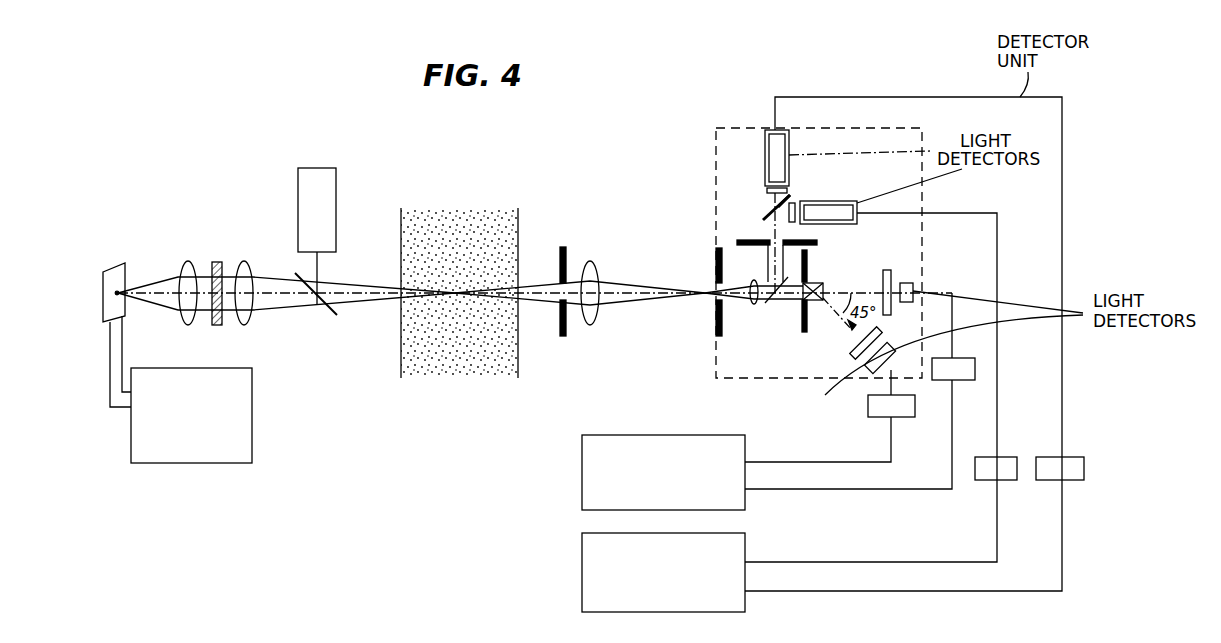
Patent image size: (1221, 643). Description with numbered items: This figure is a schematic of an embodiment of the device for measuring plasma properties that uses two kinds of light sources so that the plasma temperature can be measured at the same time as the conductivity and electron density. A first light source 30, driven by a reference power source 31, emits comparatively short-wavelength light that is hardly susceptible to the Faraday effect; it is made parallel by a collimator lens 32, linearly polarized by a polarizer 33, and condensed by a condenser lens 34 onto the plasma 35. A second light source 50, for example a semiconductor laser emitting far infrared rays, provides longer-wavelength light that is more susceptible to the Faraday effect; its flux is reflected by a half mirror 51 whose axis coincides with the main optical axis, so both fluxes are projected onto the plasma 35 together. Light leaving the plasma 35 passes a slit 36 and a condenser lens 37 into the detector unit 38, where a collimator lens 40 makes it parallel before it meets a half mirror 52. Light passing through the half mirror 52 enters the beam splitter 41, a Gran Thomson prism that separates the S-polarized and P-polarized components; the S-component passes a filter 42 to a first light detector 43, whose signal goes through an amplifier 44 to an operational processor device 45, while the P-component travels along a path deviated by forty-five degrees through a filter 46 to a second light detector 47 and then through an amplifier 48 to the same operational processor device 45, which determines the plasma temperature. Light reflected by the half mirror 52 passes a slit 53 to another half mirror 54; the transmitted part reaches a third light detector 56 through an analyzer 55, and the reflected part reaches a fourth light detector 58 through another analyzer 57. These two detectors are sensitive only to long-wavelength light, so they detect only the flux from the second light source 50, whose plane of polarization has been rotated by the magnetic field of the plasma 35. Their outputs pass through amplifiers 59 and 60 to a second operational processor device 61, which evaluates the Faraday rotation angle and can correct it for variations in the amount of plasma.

The light source 30 is at (110, 268).
The reference power source 31 is at (252, 412).
The collimator lens 32 is at (180, 262).
The polarizer 33 is at (216, 262).
The condenser lens 34 is at (247, 262).
The plasma 35 is at (453, 213).
The slit 36 is at (562, 247).
The condenser lens 37 is at (592, 262).
The detector unit 38 is at (900, 128).
The collimator lens 40 is at (756, 304).
The beam splitter 41 is at (817, 282).
The filter 42 is at (887, 270).
The first light detector 43 is at (913, 285).
The amplifier 44 is at (958, 358).
The operational processor device 45 is at (582, 472).
The filter 46 is at (852, 350).
The second light detector 47 is at (868, 368).
The amplifier 48 is at (868, 416).
The second light source 50 is at (317, 167).
The half mirror 51 is at (332, 318).
The half mirror 52 is at (773, 303).
The slit 53 is at (748, 240).
The half mirror 54 is at (763, 218).
The analyzer 55 is at (793, 198).
The third light detector 56 is at (790, 133).
The analyzer 57 is at (795, 203).
The fourth light detector 58 is at (835, 201).
The amplifier 59 is at (1078, 457).
The amplifier 60 is at (1012, 457).
The operational processor device 61 is at (582, 567).